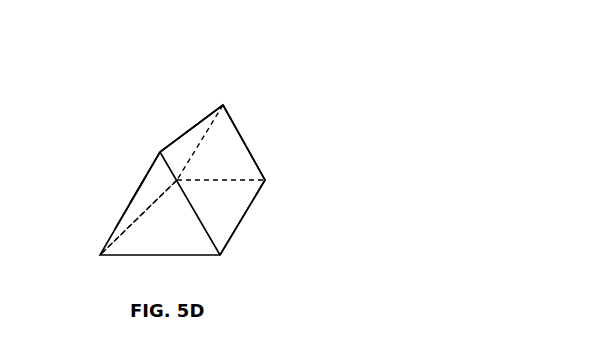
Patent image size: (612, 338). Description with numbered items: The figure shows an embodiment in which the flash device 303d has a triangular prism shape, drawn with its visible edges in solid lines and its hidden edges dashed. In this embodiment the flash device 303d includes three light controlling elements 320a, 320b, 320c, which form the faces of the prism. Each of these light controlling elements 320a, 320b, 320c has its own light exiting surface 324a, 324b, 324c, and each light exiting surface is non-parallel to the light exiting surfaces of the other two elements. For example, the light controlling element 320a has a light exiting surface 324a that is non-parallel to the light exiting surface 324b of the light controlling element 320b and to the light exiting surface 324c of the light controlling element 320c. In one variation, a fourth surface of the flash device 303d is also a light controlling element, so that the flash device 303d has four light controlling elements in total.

The flash device 303d is at (243, 85).
The light controlling element 320a is at (223, 148).
The light controlling element 320b is at (138, 195).
The light controlling element 320c is at (154, 142).
The light exiting surface 324a is at (248, 172).
The light exiting surface 324b is at (130, 230).
The light exiting surface 324c is at (141, 171).